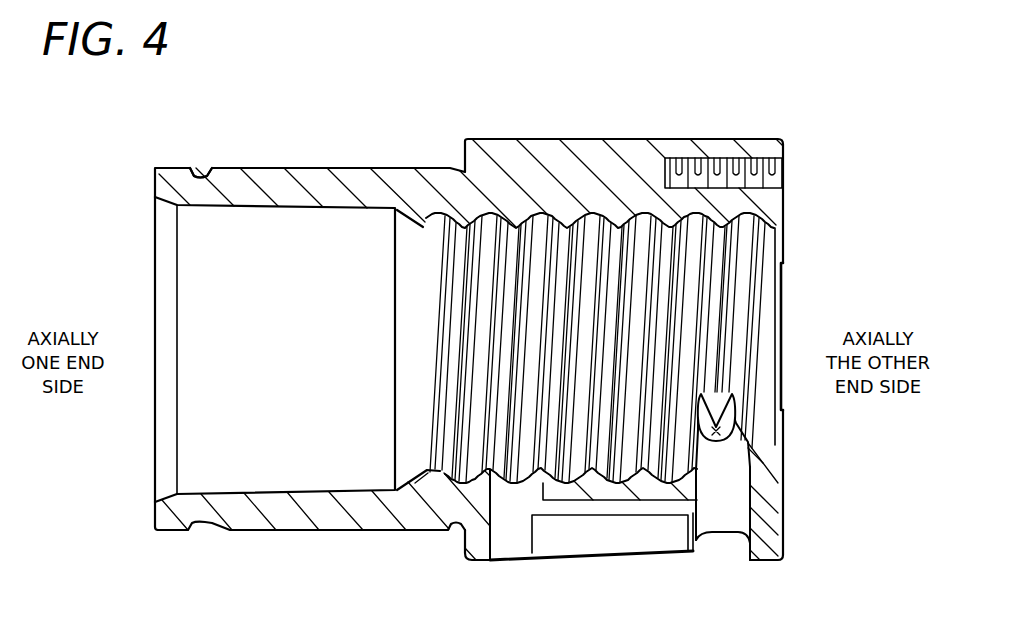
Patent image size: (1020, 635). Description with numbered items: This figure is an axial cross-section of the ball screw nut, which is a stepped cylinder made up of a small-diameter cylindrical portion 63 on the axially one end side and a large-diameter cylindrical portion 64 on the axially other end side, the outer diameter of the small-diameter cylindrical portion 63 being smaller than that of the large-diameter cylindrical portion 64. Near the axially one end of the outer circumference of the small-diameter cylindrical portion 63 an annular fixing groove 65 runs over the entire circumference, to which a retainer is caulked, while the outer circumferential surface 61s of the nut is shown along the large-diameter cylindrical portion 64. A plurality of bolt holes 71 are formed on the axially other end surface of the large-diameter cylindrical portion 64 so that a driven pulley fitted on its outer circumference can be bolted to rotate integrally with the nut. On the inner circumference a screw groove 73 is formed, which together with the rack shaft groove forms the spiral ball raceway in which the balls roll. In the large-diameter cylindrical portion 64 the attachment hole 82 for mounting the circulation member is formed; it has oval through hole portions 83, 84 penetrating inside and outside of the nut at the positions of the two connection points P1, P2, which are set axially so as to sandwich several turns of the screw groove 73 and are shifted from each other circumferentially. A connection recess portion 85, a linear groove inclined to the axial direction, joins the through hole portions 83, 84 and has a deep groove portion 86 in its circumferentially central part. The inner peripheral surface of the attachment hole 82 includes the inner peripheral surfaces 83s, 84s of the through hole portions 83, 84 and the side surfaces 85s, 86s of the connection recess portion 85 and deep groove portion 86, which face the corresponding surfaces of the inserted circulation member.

The small-diameter cylindrical portion 63 is at (268, 173).
The large-diameter cylindrical portion 64 is at (547, 153).
The fixing groove 65 is at (211, 178).
The bolt hole 71 is at (716, 166).
The outer circumferential surface 61s is at (742, 140).
The screw groove 73 is at (428, 227).
The attachment hole 82 is at (481, 566).
The through hole portion 83 is at (494, 559).
The inner peripheral surface 83s is at (530, 545).
The through hole portion 84 is at (735, 541).
The inner peripheral surface 84s is at (745, 492).
The connection recess portion 85 is at (540, 518).
The side surface 85s is at (607, 537).
The deep groove portion 86 is at (694, 503).
The side surface 86s is at (675, 537).
The connection point P1 is at (488, 523).
The connection point P2 is at (742, 431).